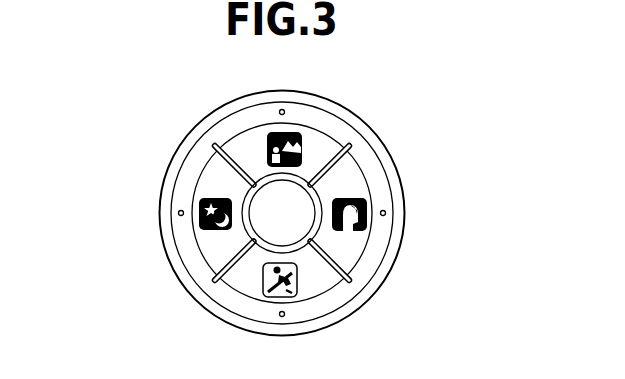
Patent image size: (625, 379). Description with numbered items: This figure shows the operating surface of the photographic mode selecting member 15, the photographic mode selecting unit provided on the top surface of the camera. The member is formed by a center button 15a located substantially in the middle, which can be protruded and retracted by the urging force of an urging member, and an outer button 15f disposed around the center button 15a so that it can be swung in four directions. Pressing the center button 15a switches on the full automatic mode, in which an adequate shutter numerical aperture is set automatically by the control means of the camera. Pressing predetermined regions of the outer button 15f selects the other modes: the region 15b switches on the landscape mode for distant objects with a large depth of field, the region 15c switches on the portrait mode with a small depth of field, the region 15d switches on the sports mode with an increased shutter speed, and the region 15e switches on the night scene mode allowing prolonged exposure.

The photographic mode selecting member 15 is at (387, 138).
The center button 15a is at (305, 237).
The landscape mode region 15b is at (309, 156).
The portrait mode region 15c is at (340, 188).
The sports mode region 15d is at (305, 293).
The night scene mode region 15e is at (220, 242).
The outer button 15f is at (353, 262).